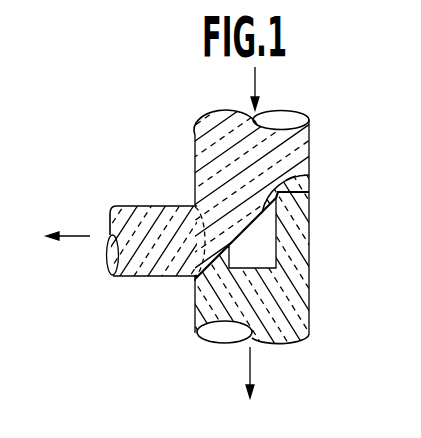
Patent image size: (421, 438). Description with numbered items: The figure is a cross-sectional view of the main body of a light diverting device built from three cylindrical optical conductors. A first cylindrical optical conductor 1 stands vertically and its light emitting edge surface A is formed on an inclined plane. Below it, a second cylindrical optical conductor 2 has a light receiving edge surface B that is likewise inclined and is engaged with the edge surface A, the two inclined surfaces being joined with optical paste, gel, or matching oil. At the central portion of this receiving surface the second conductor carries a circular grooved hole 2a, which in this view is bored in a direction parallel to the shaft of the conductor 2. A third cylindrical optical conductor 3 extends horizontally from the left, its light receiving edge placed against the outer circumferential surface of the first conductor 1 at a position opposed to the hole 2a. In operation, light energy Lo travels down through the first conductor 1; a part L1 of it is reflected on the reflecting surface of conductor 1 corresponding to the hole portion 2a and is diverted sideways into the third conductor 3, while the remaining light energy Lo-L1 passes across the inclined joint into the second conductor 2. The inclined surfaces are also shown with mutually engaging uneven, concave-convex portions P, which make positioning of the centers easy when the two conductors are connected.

The first cylindrical optical conductor 1 is at (303, 140).
The second cylindrical optical conductor 2 is at (300, 315).
The circular grooved hole 2a is at (273, 259).
The third cylindrical optical conductor 3 is at (148, 211).
The light emitting edge surface A is at (292, 178).
The light receiving edge surface B is at (199, 284).
The uneven (concave-convex) portion P is at (283, 197).
The light energy Lo is at (271, 88).
The part of the light energy L1 is at (68, 251).
The remaining light energy Lo-L1 is at (283, 382).